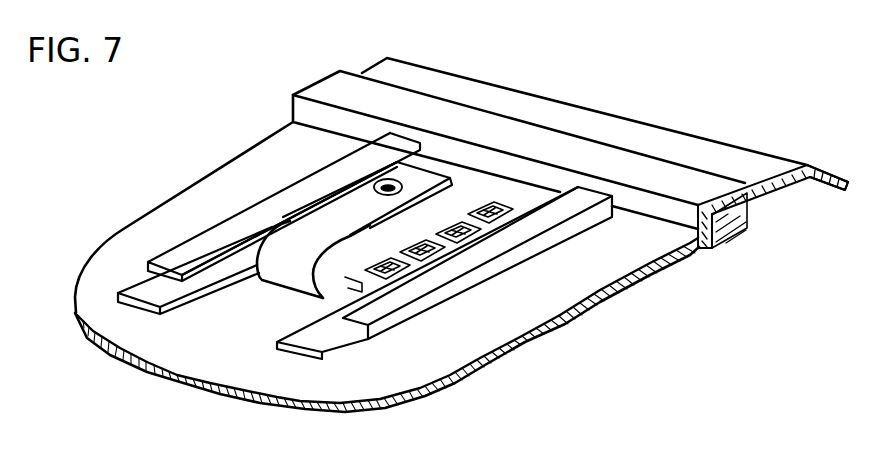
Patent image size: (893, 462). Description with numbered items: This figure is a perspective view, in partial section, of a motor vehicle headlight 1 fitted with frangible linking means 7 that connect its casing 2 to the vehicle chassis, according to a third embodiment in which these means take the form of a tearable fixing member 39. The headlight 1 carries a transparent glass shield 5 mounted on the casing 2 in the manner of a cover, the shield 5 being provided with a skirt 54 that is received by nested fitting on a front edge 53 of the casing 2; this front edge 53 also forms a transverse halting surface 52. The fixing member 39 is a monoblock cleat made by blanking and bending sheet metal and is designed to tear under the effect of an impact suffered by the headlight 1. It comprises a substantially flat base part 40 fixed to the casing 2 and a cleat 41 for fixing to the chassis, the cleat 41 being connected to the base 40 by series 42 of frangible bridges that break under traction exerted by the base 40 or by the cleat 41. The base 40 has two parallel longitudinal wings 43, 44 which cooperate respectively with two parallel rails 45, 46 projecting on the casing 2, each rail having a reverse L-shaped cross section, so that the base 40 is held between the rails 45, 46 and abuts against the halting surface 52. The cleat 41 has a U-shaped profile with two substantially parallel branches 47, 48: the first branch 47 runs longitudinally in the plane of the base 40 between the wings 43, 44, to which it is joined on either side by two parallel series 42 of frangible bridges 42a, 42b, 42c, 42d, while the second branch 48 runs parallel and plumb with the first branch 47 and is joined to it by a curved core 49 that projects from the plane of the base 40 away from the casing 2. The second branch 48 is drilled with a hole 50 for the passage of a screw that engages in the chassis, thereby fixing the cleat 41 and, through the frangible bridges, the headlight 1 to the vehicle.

The headlight 1 is at (248, 99).
The casing 2 is at (134, 345).
The glass shield 5 is at (685, 135).
The linking means 7 is at (230, 343).
The fixing member 39 is at (507, 188).
The base part 40 is at (553, 175).
The cleat 41 is at (290, 230).
The series of frangible bridges 42 is at (357, 263).
The frangible bridge 42a is at (392, 296).
The frangible bridge 42b is at (427, 277).
The frangible bridge 42c is at (467, 250).
The frangible bridge 42d is at (502, 235).
The longitudinal wing 43 is at (330, 348).
The longitudinal wing 44 is at (135, 290).
The rail 45 is at (573, 206).
The rail 46 is at (180, 243).
The first branch 47 is at (469, 192).
The second branch 48 is at (345, 200).
The curved core 49 is at (278, 264).
The hole 50 is at (387, 180).
The halting surface 52 is at (613, 168).
The front edge 53 is at (682, 144).
The skirt 54 is at (760, 178).